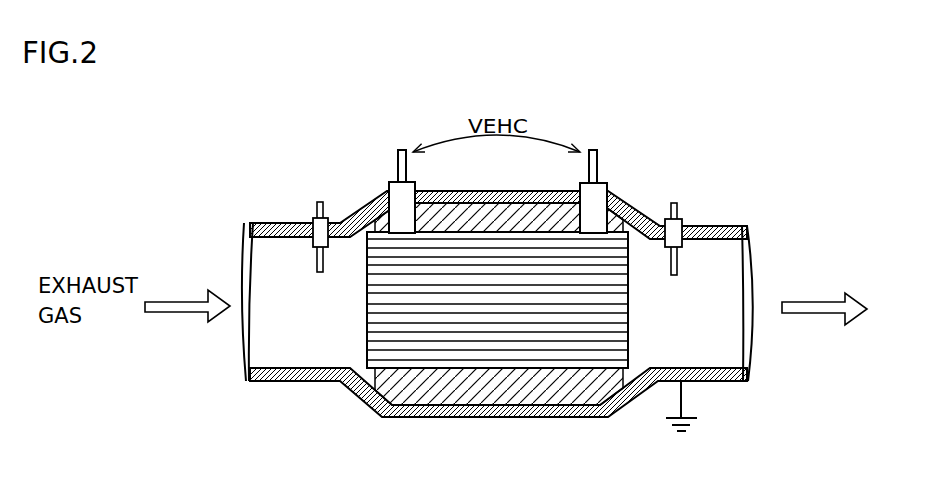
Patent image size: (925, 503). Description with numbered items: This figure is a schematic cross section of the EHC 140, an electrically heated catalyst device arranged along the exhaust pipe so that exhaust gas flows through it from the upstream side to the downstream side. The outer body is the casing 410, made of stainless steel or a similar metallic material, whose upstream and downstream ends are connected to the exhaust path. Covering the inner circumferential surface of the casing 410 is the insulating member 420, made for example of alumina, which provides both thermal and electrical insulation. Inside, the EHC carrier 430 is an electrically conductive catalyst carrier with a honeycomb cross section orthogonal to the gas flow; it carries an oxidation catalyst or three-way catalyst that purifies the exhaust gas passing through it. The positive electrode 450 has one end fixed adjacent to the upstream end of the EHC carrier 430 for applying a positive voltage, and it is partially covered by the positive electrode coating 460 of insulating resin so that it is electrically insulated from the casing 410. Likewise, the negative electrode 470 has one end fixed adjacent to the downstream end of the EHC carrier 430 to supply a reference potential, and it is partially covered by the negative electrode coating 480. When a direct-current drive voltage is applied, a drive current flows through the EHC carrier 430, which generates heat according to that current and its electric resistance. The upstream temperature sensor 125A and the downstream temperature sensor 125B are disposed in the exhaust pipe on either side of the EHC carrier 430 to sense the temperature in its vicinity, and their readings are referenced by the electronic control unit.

The EHC 140 is at (808, 80).
The casing 410 is at (302, 383).
The insulating member 420 is at (550, 390).
The EHC carrier 430 is at (457, 338).
The positive electrode 450 is at (398, 148).
The positive electrode coating 460 is at (393, 188).
The negative electrode 470 is at (592, 150).
The negative electrode coating 480 is at (595, 197).
The upstream temperature sensor 125A is at (320, 202).
The downstream temperature sensor 125B is at (676, 205).